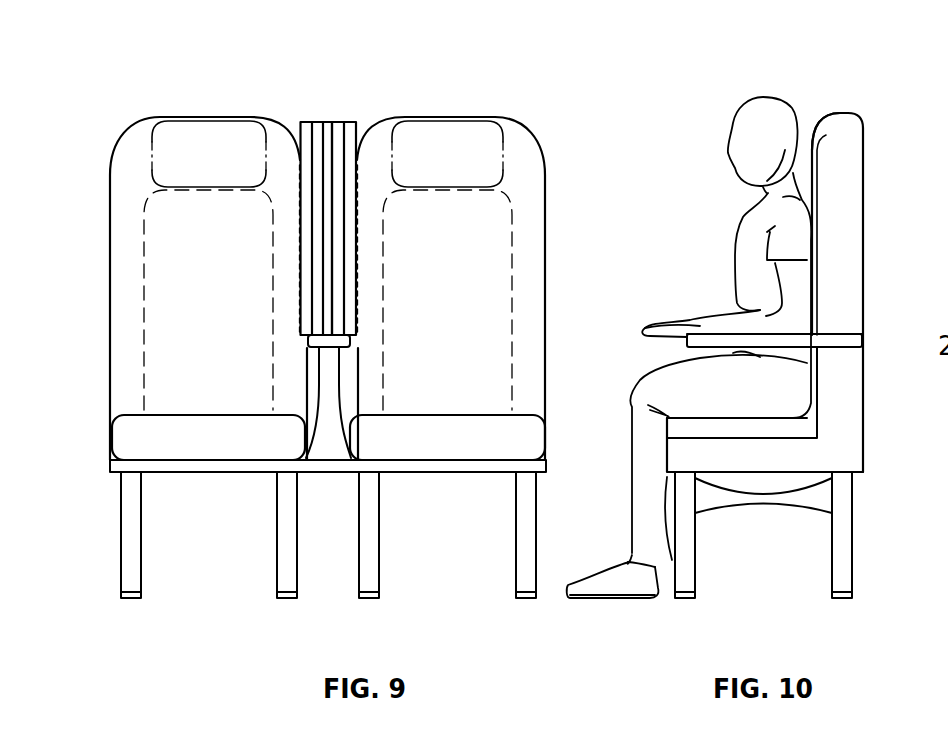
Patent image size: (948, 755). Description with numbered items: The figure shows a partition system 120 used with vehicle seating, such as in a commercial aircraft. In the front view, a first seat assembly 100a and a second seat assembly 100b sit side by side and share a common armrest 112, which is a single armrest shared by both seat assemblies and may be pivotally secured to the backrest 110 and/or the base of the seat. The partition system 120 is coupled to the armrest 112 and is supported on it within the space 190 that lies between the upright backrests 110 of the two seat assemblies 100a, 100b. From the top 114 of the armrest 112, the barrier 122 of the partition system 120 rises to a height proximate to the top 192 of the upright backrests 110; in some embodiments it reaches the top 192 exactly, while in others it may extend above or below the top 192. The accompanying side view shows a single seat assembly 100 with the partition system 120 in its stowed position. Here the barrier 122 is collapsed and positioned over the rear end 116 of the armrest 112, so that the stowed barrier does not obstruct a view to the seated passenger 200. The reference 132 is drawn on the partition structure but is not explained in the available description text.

In FIG. 9, the first seat assembly 100a is at (177, 115).
In FIG. 9, the second seat assembly 100b is at (472, 115).
In FIG. 10, the seat assembly 100 is at (874, 365).
In FIG. 9, the backrest 110 is at (168, 135).
In FIG. 9, the armrest 112 is at (330, 343).
In FIG. 10, the armrest 112 is at (773, 340).
In FIG. 9, the top of the armrest 114 is at (340, 335).
In FIG. 10, the rear end of the armrest 116 is at (857, 340).
In FIG. 9, the partition system 120 is at (362, 80).
In FIG. 10, the partition system 120 is at (875, 116).
In FIG. 9, the barrier 122 is at (335, 150).
In FIG. 9, the divider frame 132 is at (310, 121).
In FIG. 10, the divider frame 132 is at (847, 185).
In FIG. 9, the space 190 is at (297, 108).
In FIG. 9, the top of the backrest 192 is at (208, 117).
In FIG. 10, the passenger 200 is at (762, 97).